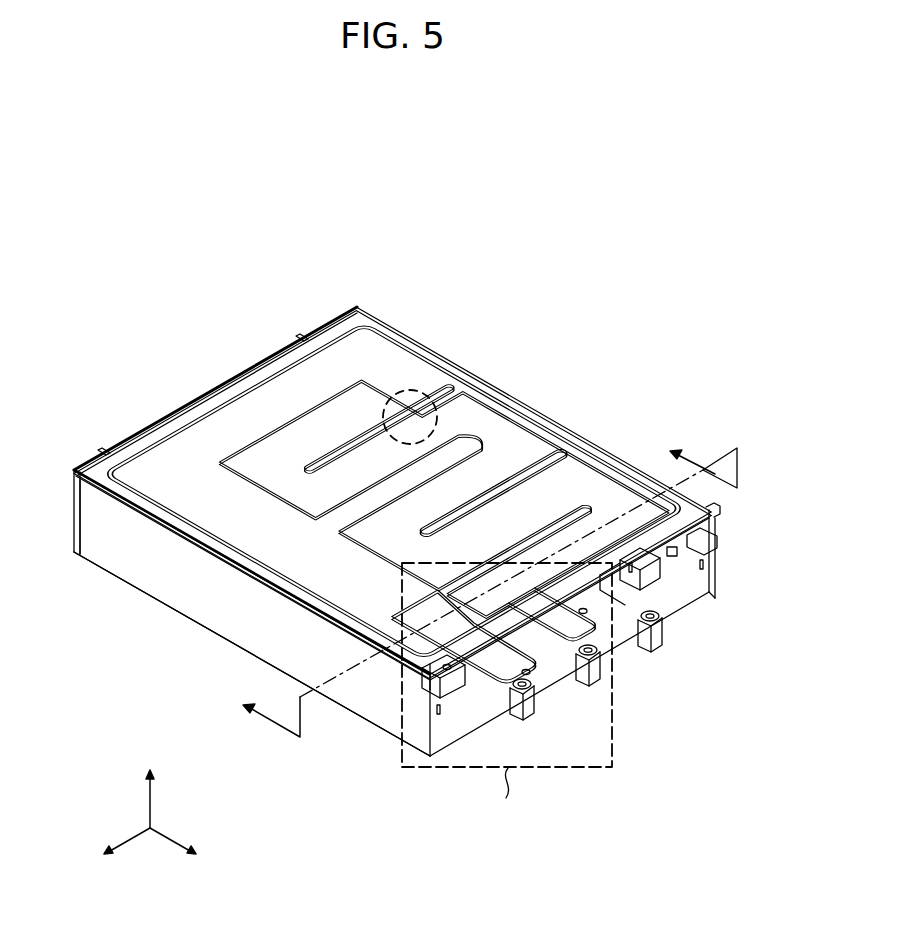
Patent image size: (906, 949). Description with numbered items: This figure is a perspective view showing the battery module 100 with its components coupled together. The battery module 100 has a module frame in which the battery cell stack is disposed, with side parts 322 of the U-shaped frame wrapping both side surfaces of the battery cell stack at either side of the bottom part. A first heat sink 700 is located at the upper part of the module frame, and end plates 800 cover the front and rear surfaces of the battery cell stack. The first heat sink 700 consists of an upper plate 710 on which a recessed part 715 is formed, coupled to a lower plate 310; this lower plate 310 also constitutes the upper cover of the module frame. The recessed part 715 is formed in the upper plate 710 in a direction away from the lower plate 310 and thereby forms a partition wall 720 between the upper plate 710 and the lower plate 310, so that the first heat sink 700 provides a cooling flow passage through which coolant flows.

The battery module 100 is at (291, 245).
The lower plate 310 is at (270, 582).
The side parts 322 is at (163, 577).
The first heat sink 700 is at (613, 365).
The upper plate 710 is at (567, 445).
The recessed part 715 is at (495, 420).
The partition wall 720 is at (420, 390).
The end plates 800 is at (673, 603).